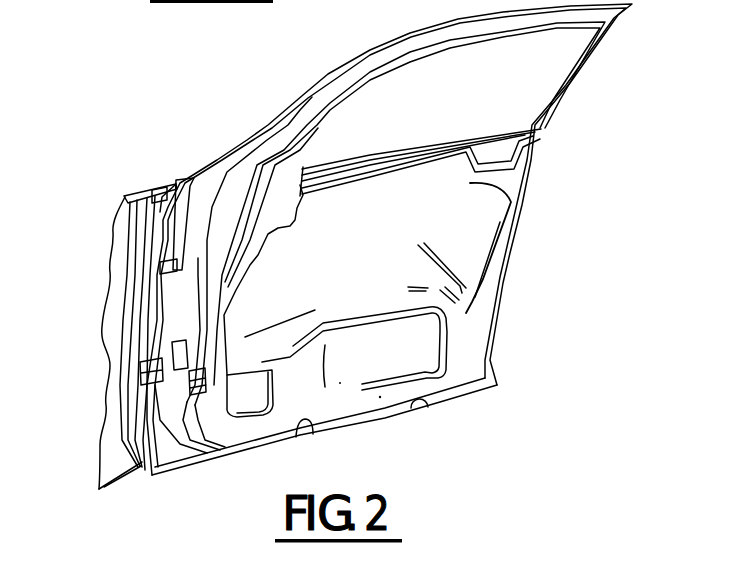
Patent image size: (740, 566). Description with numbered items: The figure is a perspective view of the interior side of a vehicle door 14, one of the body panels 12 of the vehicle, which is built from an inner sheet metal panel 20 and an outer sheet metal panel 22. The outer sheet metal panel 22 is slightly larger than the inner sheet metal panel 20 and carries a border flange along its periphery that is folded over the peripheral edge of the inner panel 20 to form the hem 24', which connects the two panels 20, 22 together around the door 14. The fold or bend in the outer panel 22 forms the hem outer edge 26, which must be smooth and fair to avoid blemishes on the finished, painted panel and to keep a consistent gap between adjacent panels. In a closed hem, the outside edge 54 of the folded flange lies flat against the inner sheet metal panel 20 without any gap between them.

The body panels 12 is at (103, 283).
The doors 14 is at (526, 203).
The inner sheet metal panel 20 is at (528, 163).
The outer sheet metal panel 22 is at (464, 403).
The hinges 24' is at (216, 313).
The hem outer edge 26 is at (348, 431).
The outside edge of the flange 54 is at (428, 408).